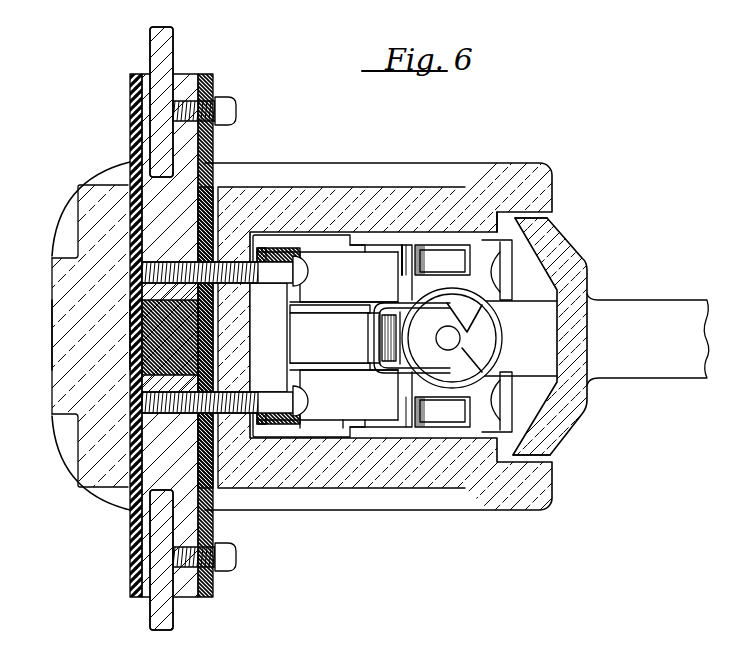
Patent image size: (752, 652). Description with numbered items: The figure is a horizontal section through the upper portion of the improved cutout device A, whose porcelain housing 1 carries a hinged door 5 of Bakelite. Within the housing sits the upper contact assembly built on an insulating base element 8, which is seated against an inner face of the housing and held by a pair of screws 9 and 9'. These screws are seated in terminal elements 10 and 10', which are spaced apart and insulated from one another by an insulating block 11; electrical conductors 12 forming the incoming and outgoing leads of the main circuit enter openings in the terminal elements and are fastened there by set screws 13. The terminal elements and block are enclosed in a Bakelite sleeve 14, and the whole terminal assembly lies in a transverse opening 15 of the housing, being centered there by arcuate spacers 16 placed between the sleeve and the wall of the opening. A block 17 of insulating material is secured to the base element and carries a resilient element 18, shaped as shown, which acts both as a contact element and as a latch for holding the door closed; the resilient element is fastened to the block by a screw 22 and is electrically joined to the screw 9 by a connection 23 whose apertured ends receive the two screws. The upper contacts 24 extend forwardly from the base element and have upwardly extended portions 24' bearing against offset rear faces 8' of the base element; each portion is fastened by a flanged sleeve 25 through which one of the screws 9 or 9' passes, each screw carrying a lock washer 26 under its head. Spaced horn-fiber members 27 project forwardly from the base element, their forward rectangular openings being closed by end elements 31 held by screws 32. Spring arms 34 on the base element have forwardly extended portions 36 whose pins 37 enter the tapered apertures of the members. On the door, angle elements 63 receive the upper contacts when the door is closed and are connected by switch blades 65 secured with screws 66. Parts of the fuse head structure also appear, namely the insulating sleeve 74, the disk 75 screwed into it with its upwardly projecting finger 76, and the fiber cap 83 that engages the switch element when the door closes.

The housing 1 is at (347, 187).
The door 5 is at (584, 262).
The base element 8 is at (268, 337).
The rear faces 8' is at (332, 339).
The screw 9 is at (225, 449).
The screw 9' is at (225, 271).
The terminal element 10 is at (109, 417).
The terminal element 10' is at (189, 320).
The insulating block 11 is at (130, 347).
The electrical conductors 12 is at (172, 44).
The set screws 13 is at (234, 104).
The sleeve 14 is at (133, 138).
The opening 15 is at (105, 500).
The arcuate spacers 16 is at (214, 190).
The block 17 is at (335, 338).
The resilient element 18 is at (481, 317).
The screw 22 is at (393, 303).
The connection 23 is at (350, 372).
The upper contacts 24 is at (420, 208).
The upwardly extended portions 24' is at (273, 295).
The sleeve 25 is at (293, 299).
The lock washer 26 is at (301, 253).
The spaced members 27 is at (384, 336).
The end element 31 is at (410, 280).
The screws 32 is at (416, 269).
The spring arms 34 is at (302, 430).
The forwardly extended portions 36 is at (343, 428).
The pins 37 is at (344, 253).
The angle elements 63 is at (493, 255).
The switch blades 65 is at (549, 222).
The screws 66 is at (497, 280).
The sleeve 74 is at (500, 368).
The disk 75 is at (482, 346).
The finger 76 is at (460, 338).
The cap 83 is at (399, 328).
The cutout device A is at (557, 206).